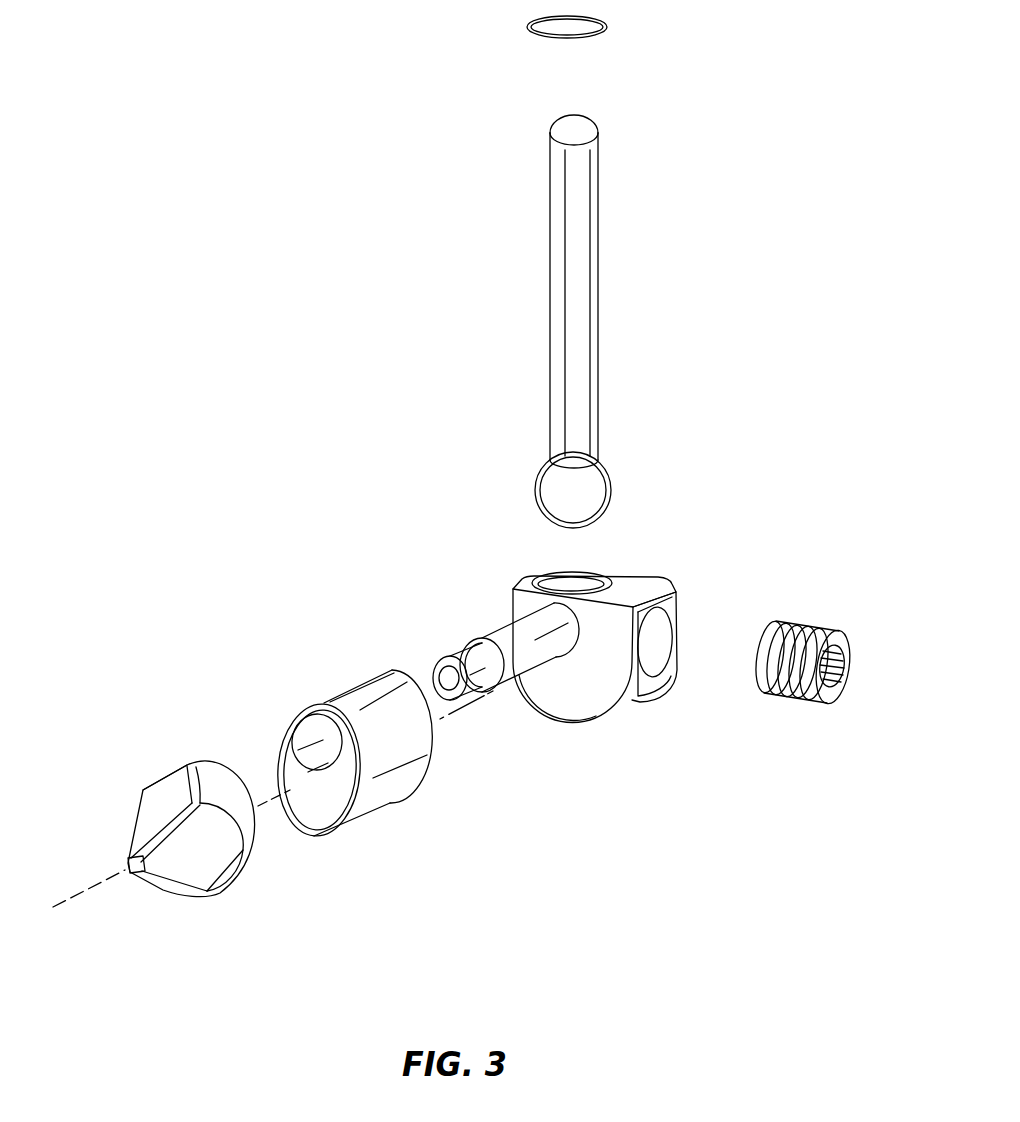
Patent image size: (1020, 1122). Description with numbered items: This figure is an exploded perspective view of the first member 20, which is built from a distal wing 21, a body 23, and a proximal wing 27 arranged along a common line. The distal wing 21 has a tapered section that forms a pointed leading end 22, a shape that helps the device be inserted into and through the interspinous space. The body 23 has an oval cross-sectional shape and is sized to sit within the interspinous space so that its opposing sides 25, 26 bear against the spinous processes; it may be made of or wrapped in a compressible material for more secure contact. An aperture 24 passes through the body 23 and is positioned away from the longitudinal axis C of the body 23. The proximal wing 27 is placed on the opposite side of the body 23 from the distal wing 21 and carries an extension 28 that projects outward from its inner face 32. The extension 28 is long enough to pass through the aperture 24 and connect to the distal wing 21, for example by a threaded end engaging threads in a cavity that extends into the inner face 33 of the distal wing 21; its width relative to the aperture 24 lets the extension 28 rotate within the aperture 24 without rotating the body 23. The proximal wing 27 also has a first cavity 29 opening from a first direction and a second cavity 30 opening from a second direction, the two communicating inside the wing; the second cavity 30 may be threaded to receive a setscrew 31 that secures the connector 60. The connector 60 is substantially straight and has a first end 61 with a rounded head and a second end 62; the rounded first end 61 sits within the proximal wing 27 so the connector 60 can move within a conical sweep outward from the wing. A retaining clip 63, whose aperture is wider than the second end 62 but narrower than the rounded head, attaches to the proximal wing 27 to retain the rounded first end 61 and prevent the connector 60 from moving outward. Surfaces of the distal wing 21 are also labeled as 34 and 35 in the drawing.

The first member 20 is at (258, 410).
The distal wing 21 is at (172, 778).
The pointed leading end 22 is at (128, 873).
The body 23 is at (390, 806).
The aperture 24 is at (307, 733).
The opposing side 25 is at (289, 808).
The opposing side 26 is at (382, 712).
The proximal wing 27 is at (646, 578).
The extension 28 is at (502, 623).
The first cavity 29 is at (588, 577).
The second cavity 30 is at (661, 632).
The setscrew 31 is at (793, 627).
The inner face 32 is at (600, 700).
The inner face 33 is at (242, 772).
The knob lower surface 34 is at (208, 895).
The knob upper surface 35 is at (188, 769).
The connector 60 is at (580, 286).
The first end 61 is at (553, 522).
The second end 62 is at (576, 121).
The retaining clip 63 is at (601, 31).
The longitudinal axis C is at (457, 713).